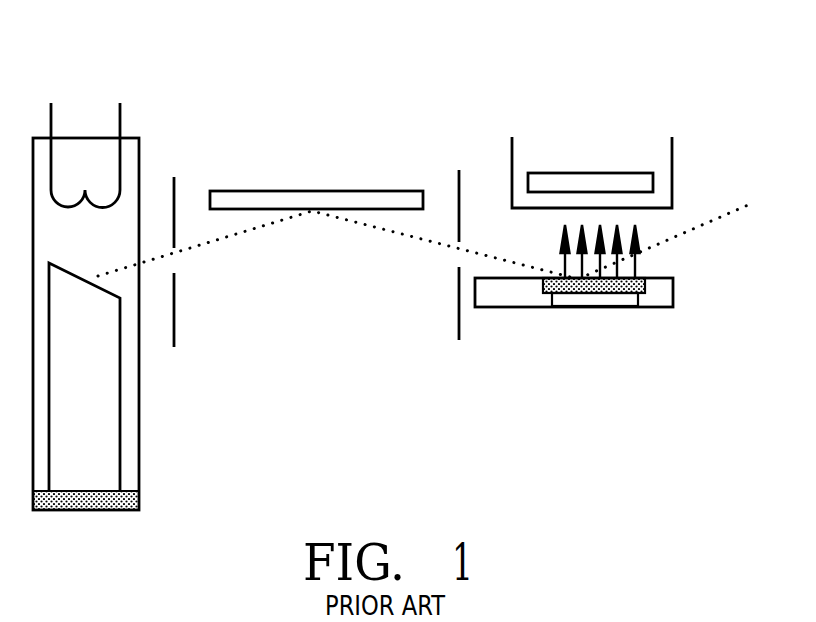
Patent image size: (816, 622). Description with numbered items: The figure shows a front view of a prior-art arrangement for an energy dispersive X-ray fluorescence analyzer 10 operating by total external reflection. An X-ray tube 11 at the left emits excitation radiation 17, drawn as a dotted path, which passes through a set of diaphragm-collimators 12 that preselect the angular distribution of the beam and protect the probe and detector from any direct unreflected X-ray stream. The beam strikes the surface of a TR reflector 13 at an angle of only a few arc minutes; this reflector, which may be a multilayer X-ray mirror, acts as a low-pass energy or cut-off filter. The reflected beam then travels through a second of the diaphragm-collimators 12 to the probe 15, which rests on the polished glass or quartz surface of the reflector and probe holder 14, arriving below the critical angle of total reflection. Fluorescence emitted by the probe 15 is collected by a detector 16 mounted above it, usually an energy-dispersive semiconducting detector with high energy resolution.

The analyzer 10 is at (605, 79).
The X-ray tube 11 is at (73, 94).
The diaphragm-collimators 12 is at (185, 160).
The TR reflector 13 is at (312, 174).
The reflector and probe holder 14 is at (634, 321).
The probe 15 is at (654, 270).
The detector 16 is at (690, 153).
The excitation radiation 17 is at (218, 255).